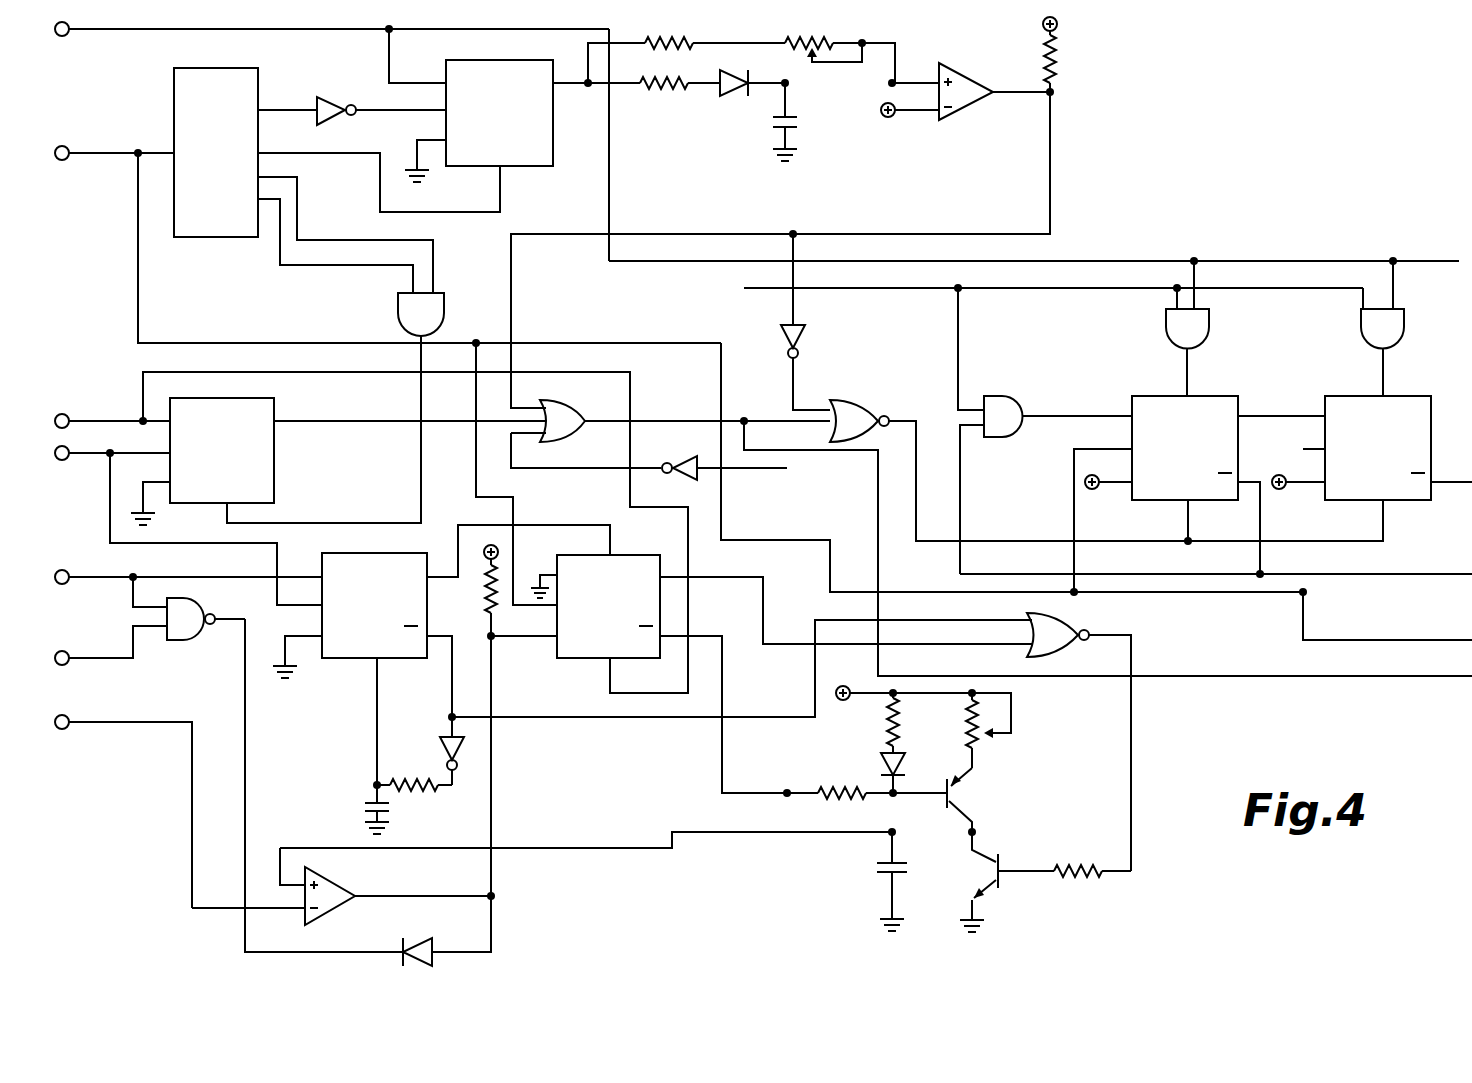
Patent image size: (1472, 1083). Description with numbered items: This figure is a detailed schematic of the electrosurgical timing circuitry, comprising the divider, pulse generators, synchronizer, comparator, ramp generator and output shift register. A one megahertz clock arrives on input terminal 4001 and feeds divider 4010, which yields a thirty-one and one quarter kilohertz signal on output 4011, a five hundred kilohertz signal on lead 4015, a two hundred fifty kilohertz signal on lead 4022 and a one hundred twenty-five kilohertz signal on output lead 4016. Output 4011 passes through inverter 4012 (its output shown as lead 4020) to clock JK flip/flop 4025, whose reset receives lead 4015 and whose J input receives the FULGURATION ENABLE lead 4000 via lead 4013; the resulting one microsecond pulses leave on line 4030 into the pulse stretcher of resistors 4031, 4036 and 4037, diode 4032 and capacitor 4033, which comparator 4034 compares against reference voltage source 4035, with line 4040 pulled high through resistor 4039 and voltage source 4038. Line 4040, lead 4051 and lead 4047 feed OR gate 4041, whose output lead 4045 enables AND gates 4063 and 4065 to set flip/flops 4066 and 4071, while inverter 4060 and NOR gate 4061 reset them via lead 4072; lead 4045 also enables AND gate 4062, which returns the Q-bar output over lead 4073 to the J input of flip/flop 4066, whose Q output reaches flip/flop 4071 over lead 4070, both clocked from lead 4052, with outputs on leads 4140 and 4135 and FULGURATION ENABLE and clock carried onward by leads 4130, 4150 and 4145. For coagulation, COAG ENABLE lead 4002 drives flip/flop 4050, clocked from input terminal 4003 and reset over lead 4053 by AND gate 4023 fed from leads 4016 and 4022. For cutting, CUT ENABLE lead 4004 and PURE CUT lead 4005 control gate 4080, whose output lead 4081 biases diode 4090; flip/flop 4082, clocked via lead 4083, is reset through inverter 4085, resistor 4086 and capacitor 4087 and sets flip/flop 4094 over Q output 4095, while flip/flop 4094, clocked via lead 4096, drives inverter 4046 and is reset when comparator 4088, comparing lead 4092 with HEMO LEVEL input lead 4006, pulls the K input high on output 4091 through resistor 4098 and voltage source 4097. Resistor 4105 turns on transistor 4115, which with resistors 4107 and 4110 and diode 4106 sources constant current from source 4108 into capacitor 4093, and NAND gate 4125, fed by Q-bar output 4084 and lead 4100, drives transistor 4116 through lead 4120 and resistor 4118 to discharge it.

The FULGURATION ENABLE lead 4000 is at (140, 34).
The input terminal 4001 is at (92, 156).
The COAG ENABLE lead 4002 is at (164, 412).
The input terminal 4003 is at (75, 490).
The CUT ENABLE lead 4004 is at (96, 590).
The PURE CUT lead 4005 is at (134, 664).
The HEMO LEVEL input lead 4006 is at (152, 730).
The divider 4010 is at (172, 107).
The output 4011 is at (316, 70).
The inverter 4012 is at (336, 98).
The lead 4013 is at (391, 62).
The lead 4015 is at (312, 176).
The output lead 4016 is at (328, 275).
The clock line 4020 is at (364, 112).
The lead 4022 is at (435, 266).
The AND gate 4023 is at (443, 317).
The JK flip/flop 4025 is at (484, 62).
The flip-flop output line 4030 is at (578, 94).
The resistor 4031 is at (660, 92).
The diode 4032 is at (738, 101).
The capacitor 4033 is at (778, 129).
The comparator 4034 is at (962, 70).
The reference voltage source 4035 is at (880, 112).
The variable resistor 4036 is at (803, 40).
The resistor 4037 is at (668, 40).
The voltage source 4038 is at (1056, 28).
The resistor 4039 is at (1061, 60).
The line 4040 is at (513, 278).
The OR gate 4041 is at (576, 406).
The output lead 4045 is at (641, 421).
The inverter 4046 is at (682, 461).
The lead 4047 is at (536, 468).
The flip/flop 4050 is at (274, 468).
The Q output 4051 is at (395, 424).
The lead 4052 is at (290, 343).
The lead 4053 is at (421, 485).
The inverter 4060 is at (806, 337).
The NOR gate 4061 is at (868, 392).
The AND gate 4062 is at (1005, 400).
The AND gate 4063 is at (1203, 342).
The AND gate 4065 is at (1390, 342).
The JK flip/flop 4066 is at (1206, 396).
The lead 4070 is at (1287, 414).
The JK flip/flop 4071 is at (1400, 396).
The lead 4072 is at (1168, 541).
The lead 4073 is at (1258, 510).
The gate 4080 is at (198, 610).
The output lead 4081 is at (246, 726).
The flip/flop 4082 is at (368, 554).
The lead 4083 is at (278, 562).
The Q-bar output 4084 is at (582, 714).
The inverter 4085 is at (440, 746).
The resistor 4086 is at (412, 792).
The capacitor 4087 is at (365, 806).
The comparator 4088 is at (336, 888).
The diode 4090 is at (428, 952).
The output 4091 is at (455, 896).
The lead 4092 is at (522, 848).
The capacitor 4093 is at (890, 876).
The flip/flop 4094 is at (615, 555).
The Q output 4095 is at (600, 527).
The lead 4096 is at (515, 524).
The voltage source 4097 is at (488, 568).
The resistor 4098 is at (488, 606).
The lead 4100 is at (698, 577).
The resistor 4105 is at (870, 800).
The diode 4106 is at (885, 766).
The resistor 4107 is at (893, 738).
The source 4108 is at (848, 673).
The variable resistor 4110 is at (1012, 726).
The transistor 4115 is at (960, 786).
The transistor 4116 is at (985, 871).
The resistor 4118 is at (1075, 868).
The lead 4120 is at (1135, 730).
The NAND gate 4125 is at (1075, 616).
The lead 4130 is at (1398, 262).
The lead 4135 is at (1462, 492).
The lead 4140 is at (1462, 576).
The output line 4145 is at (1462, 678).
The lead 4150 is at (1462, 642).